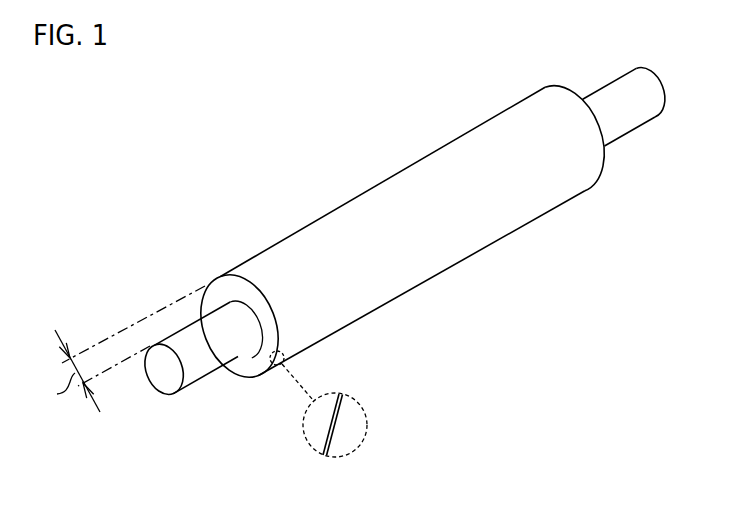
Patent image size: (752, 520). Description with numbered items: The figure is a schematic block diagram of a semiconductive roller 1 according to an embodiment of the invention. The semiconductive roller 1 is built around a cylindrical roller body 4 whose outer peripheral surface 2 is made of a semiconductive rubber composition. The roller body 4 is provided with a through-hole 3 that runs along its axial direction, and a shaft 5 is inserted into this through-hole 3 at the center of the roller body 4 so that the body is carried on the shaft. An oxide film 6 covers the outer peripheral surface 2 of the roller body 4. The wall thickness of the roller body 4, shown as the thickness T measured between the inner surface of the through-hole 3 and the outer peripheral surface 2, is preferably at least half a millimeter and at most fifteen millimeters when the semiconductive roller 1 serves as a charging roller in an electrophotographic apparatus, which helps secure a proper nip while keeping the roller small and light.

The semiconductive roller 1 is at (277, 105).
The outer peripheral surface 2 is at (397, 205).
The through-hole 3 is at (238, 359).
The roller body 4 is at (448, 271).
The shaft 5 is at (163, 368).
The oxide film 6 is at (337, 422).